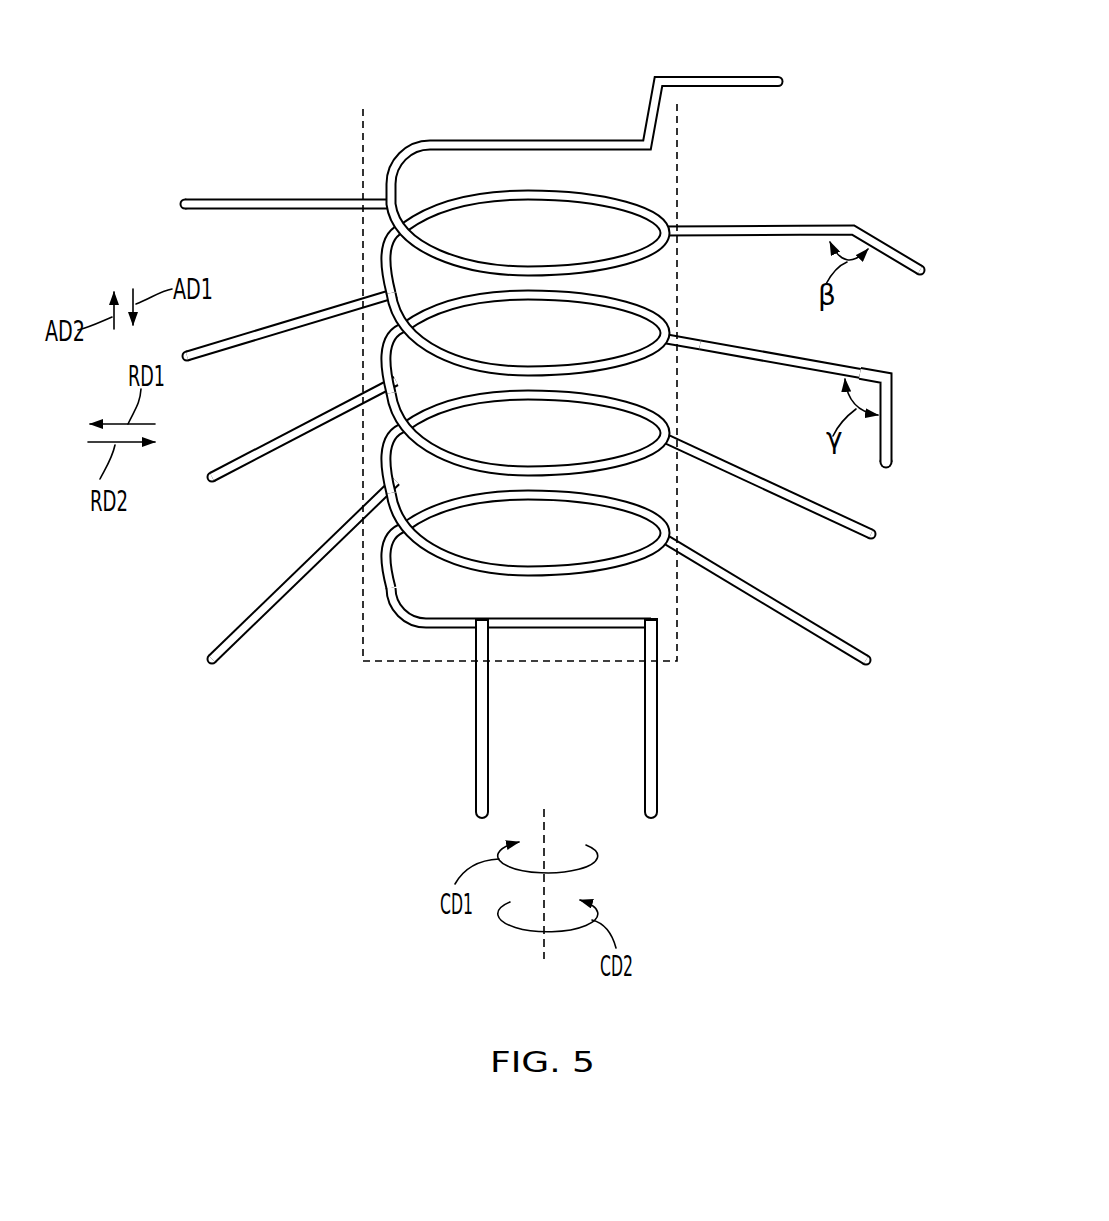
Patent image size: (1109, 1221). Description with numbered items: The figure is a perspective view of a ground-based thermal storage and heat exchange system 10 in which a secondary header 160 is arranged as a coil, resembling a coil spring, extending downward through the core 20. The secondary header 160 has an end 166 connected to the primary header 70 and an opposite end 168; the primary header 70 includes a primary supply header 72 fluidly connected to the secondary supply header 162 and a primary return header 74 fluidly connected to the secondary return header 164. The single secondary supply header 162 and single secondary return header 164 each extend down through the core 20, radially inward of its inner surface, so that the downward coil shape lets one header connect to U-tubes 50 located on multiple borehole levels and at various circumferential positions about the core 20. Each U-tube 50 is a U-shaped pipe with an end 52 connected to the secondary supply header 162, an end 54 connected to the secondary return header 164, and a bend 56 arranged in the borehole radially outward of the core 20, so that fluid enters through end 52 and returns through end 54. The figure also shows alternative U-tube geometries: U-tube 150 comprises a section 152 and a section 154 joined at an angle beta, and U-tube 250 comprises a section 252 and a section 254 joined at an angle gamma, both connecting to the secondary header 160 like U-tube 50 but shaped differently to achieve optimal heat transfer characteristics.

The ground-based thermal storage and heat exchange system 10 is at (543, 413).
The core 20 is at (680, 272).
The U-tube 50 is at (256, 199).
The end 52 is at (368, 199).
The end 54 is at (388, 211).
The bend 56 is at (178, 207).
The primary header 70 is at (726, 64).
The primary supply header 72 is at (723, 77).
The primary return header 74 is at (740, 89).
The U-tube 150 is at (798, 210).
The section 152 is at (765, 227).
The section 154 is at (880, 242).
The secondary header 160 is at (511, 140).
The secondary supply header 162 is at (560, 141).
The secondary return header 164 is at (594, 152).
The end 166 is at (661, 148).
The end 168 is at (660, 620).
The U-tube 250 is at (811, 368).
The section 252 is at (762, 351).
The section 254 is at (893, 427).